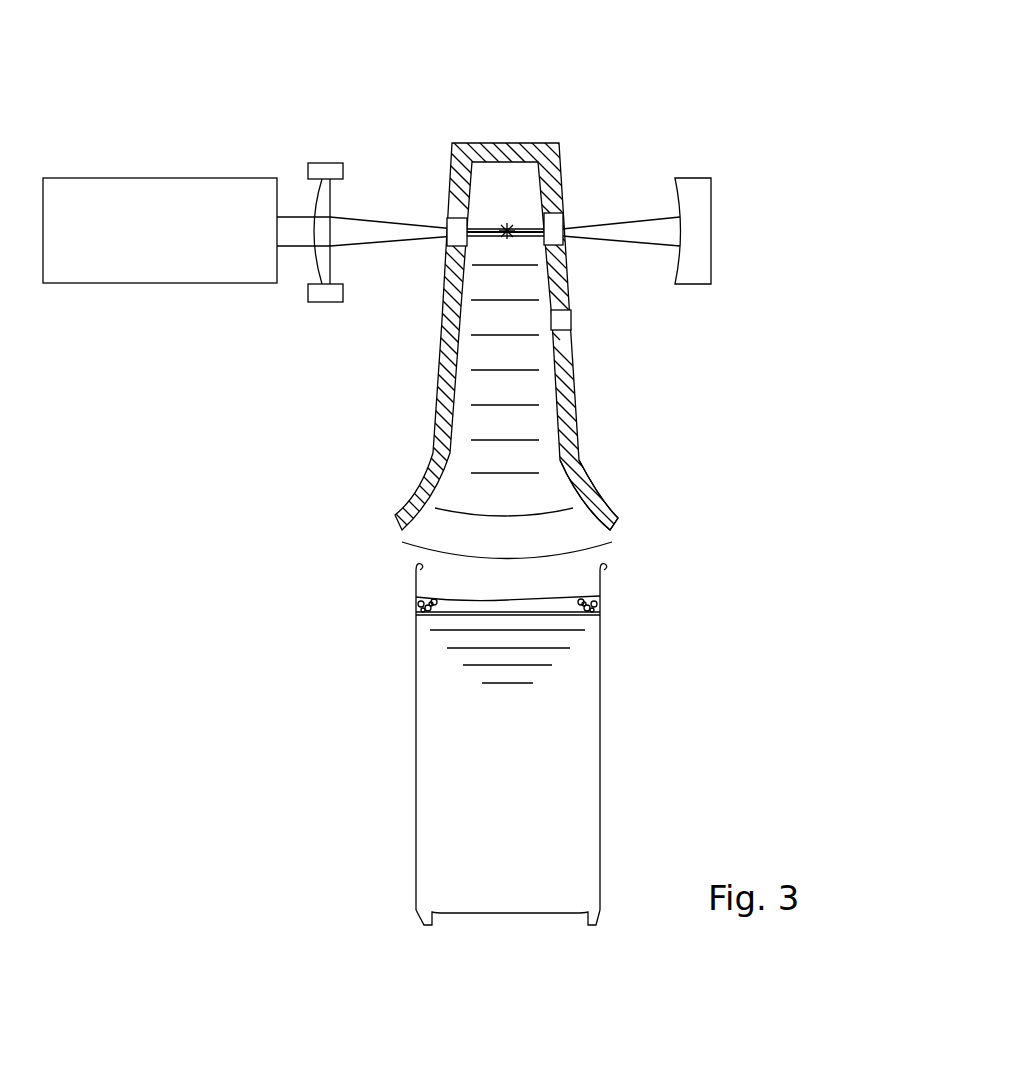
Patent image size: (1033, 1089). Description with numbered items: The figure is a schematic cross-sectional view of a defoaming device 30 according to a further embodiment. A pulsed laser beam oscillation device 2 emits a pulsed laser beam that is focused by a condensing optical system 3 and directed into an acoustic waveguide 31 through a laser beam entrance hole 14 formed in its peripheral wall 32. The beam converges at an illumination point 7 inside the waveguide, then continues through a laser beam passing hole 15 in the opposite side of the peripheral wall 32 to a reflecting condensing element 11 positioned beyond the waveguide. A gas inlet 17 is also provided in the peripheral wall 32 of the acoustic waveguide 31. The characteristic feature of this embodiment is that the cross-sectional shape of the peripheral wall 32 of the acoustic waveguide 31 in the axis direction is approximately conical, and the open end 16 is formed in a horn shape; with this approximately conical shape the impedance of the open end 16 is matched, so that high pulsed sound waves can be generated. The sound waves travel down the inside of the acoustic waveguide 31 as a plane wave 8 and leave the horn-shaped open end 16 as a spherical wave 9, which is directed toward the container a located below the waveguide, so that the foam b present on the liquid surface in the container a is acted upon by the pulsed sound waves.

The defoaming device 30 is at (565, 96).
The pulsed laser beam oscillation device 2 is at (118, 178).
The condensing optical system 3 is at (323, 163).
The illumination point 7 is at (505, 222).
The acoustic waveguide 31 is at (562, 188).
The peripheral wall 32 is at (440, 352).
The laser beam entrance hole 14 is at (460, 242).
The laser beam passing hole 15 is at (566, 215).
The gas inlet 17 is at (571, 320).
The plane wave 8 is at (505, 405).
The open end 16 is at (612, 510).
The spherical wave 9 is at (482, 602).
The reflecting condensing element 11 is at (712, 268).
The container a is at (415, 700).
The foam b is at (600, 605).